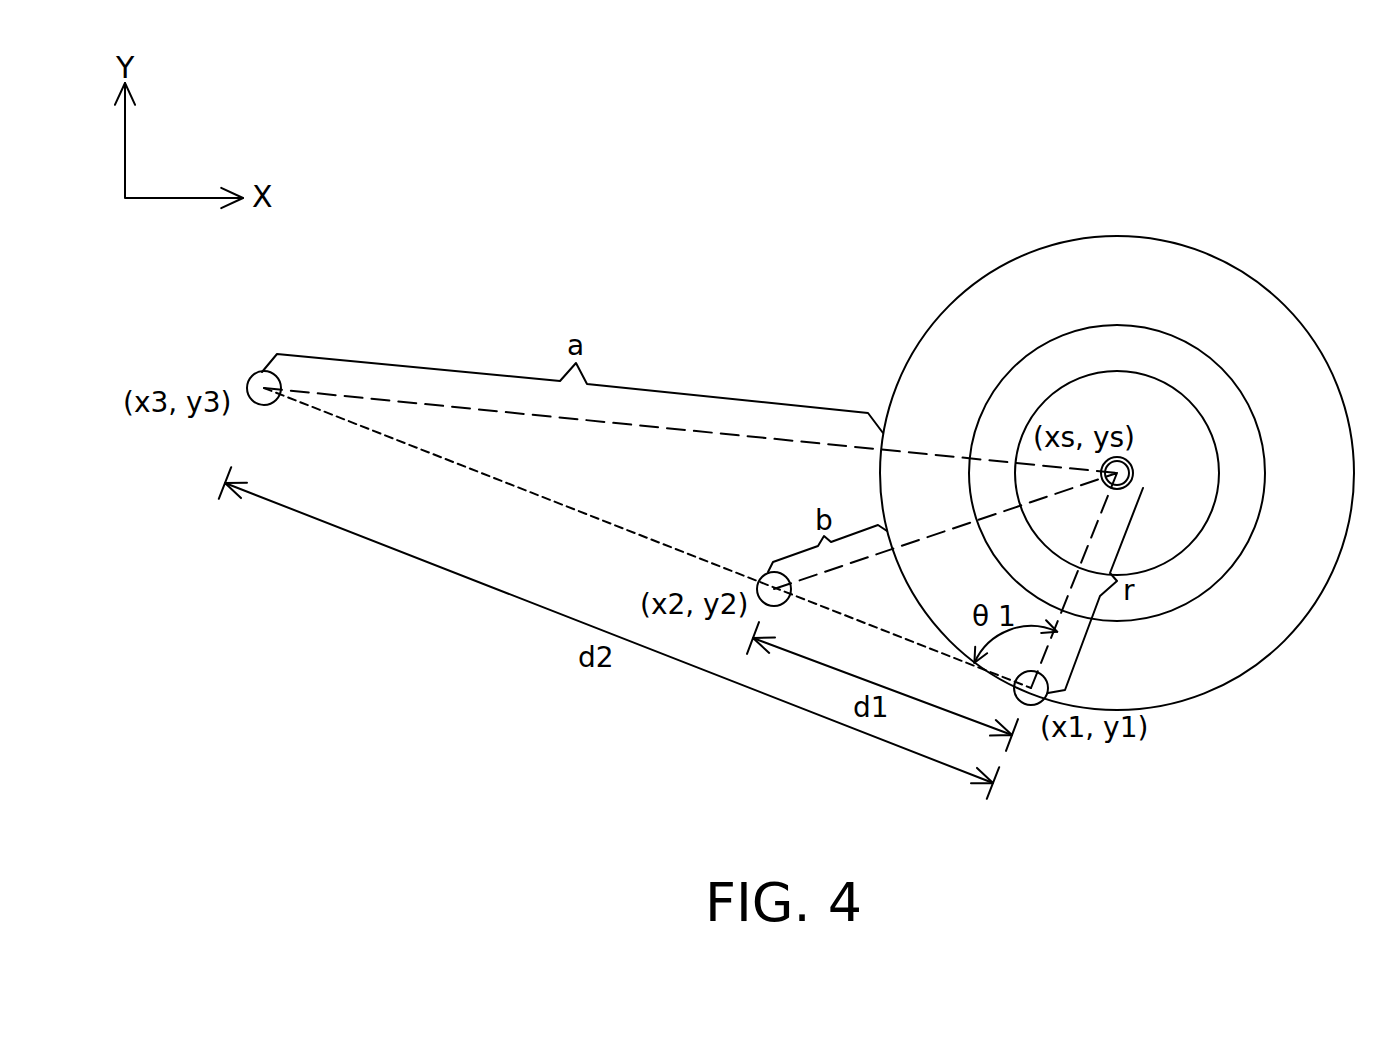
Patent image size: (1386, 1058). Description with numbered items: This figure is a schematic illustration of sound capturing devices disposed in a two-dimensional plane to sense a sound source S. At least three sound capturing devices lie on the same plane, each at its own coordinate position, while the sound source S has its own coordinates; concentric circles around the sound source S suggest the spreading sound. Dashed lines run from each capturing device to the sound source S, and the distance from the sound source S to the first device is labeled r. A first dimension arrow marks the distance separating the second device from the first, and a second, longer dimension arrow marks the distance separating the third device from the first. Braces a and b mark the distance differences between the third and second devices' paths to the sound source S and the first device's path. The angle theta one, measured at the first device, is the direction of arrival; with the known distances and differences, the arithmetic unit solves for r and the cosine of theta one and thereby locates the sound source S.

The sound source S is at (1133, 465).